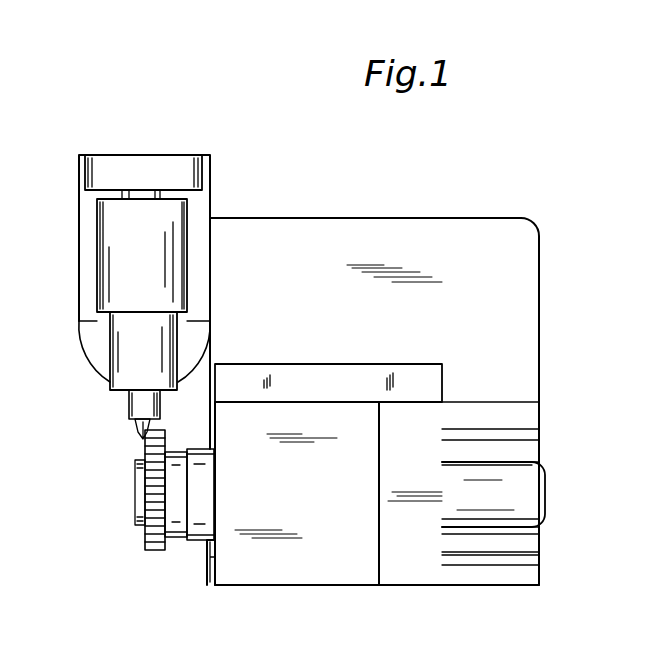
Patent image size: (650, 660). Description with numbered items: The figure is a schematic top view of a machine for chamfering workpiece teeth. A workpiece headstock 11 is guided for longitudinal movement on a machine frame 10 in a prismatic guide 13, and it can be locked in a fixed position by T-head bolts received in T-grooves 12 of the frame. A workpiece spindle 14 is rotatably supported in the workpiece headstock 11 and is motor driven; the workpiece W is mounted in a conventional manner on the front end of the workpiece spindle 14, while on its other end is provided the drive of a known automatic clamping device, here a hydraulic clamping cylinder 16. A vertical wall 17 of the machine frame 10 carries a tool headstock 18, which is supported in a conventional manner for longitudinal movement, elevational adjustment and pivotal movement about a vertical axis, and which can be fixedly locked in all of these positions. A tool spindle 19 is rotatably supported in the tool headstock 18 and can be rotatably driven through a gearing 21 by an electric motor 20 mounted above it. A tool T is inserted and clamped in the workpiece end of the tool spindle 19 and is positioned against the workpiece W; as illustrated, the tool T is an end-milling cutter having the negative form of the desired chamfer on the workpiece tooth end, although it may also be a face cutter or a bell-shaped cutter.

The machine frame 10 is at (520, 243).
The workpiece headstock 11 is at (312, 570).
The T-grooves 12 is at (512, 558).
The prismatic guide 13 is at (503, 412).
The workpiece spindle 14 is at (178, 527).
The hydraulic clamping cylinder 16 is at (523, 467).
The vertical wall 17 is at (205, 560).
The tool headstock 18 is at (122, 347).
The tool spindle 19 is at (135, 401).
The electric motor 20 is at (110, 222).
The gearing 21 is at (86, 178).
The tool T is at (137, 428).
The workpiece W is at (152, 503).